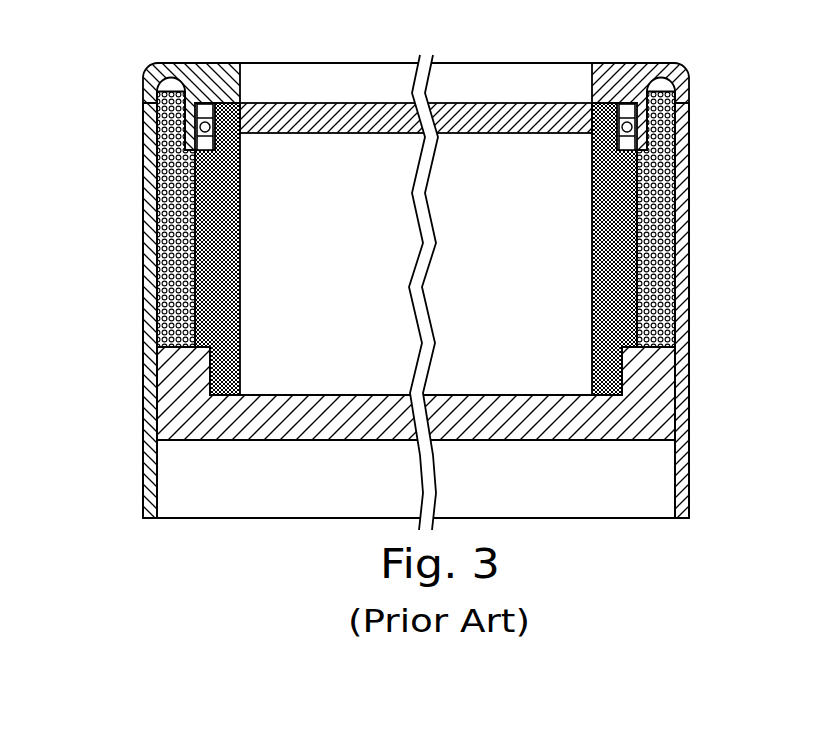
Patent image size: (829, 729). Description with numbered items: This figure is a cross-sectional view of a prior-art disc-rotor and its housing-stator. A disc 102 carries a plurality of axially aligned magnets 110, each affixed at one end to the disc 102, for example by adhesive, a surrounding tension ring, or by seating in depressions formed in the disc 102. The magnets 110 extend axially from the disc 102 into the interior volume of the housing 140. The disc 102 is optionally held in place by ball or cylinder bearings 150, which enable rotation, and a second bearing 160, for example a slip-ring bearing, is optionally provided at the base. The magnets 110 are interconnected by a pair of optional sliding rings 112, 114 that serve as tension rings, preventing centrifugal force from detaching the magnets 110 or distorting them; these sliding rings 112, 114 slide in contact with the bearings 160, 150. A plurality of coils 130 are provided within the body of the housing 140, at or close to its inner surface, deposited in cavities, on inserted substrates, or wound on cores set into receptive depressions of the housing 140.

The disc 102 is at (270, 117).
The magnets 110 is at (240, 253).
The sliding ring 112 is at (156, 140).
The sliding ring 114 is at (212, 380).
The coils 130 is at (156, 222).
The housing 140 is at (152, 70).
The bearings 150 is at (220, 102).
The second bearing 160 is at (200, 440).